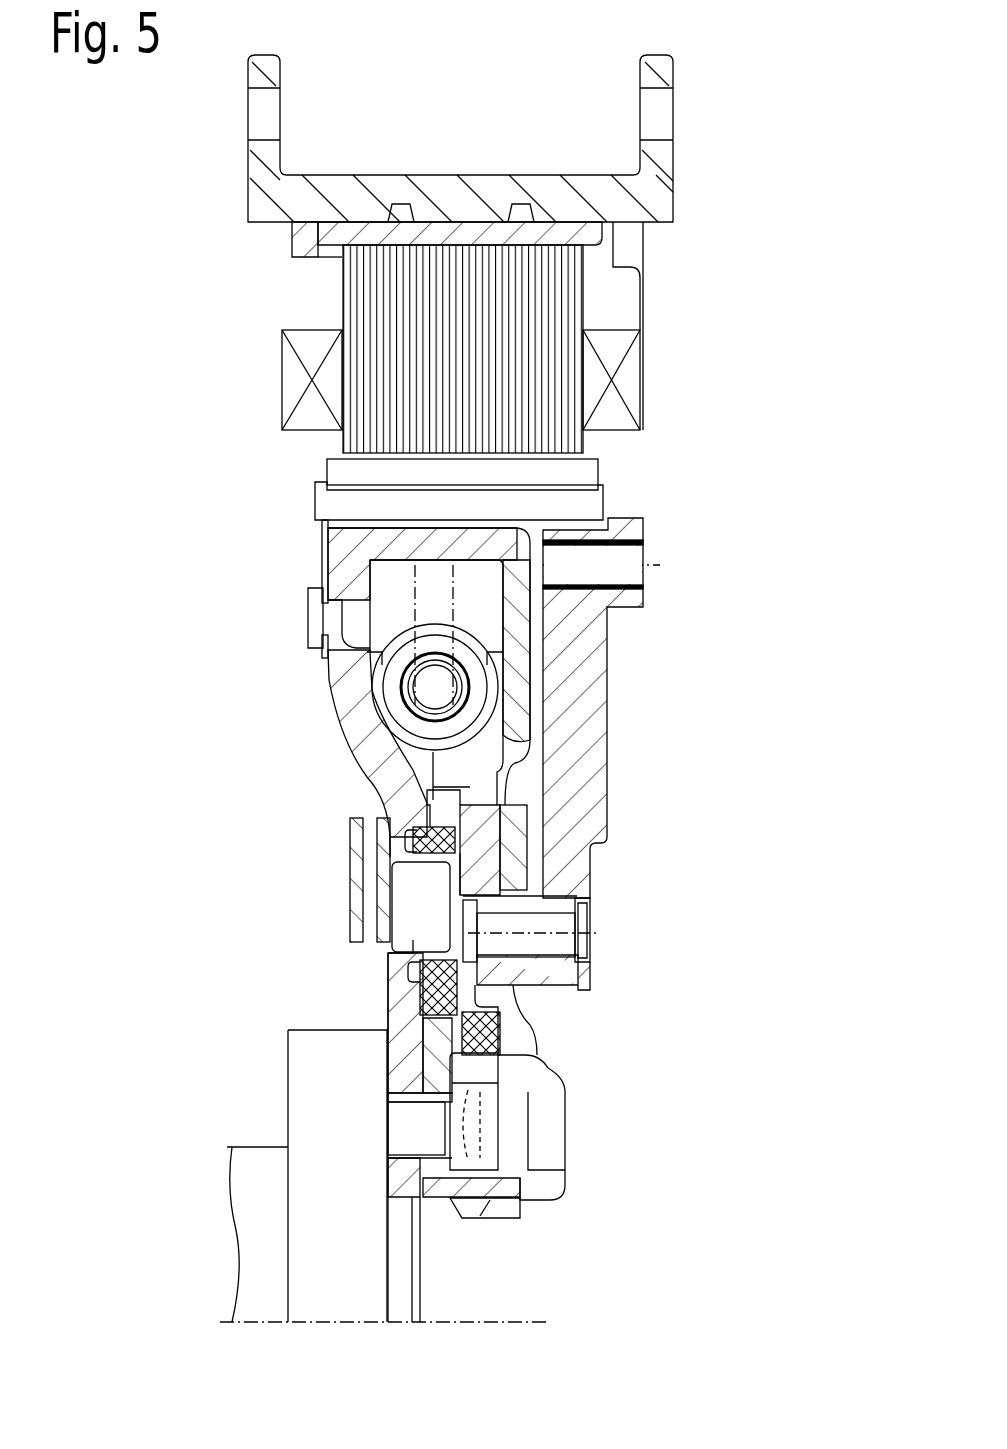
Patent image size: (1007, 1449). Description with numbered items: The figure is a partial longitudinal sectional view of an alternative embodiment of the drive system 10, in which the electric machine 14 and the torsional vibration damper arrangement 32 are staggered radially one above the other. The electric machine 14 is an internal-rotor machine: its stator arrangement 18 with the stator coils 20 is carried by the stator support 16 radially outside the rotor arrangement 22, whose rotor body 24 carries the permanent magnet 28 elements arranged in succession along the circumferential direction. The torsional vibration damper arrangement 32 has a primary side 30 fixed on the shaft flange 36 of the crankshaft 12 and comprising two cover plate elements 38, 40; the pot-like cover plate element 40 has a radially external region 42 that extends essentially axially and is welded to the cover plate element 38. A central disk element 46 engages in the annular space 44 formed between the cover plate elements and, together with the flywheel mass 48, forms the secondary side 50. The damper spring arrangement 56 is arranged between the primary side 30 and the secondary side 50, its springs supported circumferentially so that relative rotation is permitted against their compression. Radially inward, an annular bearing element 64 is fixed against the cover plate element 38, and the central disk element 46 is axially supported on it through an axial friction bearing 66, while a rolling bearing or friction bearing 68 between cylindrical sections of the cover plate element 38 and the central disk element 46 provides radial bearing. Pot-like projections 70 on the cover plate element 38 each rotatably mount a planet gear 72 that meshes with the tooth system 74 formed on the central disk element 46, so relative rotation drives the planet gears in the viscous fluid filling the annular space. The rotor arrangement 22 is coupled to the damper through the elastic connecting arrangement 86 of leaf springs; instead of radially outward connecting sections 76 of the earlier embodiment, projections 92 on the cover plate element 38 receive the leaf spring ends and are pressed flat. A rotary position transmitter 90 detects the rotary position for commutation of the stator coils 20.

The drive system 10 is at (732, 197).
The crankshaft 12 is at (246, 1245).
The electric machine 14 is at (717, 117).
The stator support 16 is at (422, 175).
The stator arrangement 18 is at (533, 126).
The stator coils 20 is at (367, 288).
The rotor arrangement 22 is at (281, 500).
The rotor body 24 is at (582, 503).
The permanent magnet 28 is at (603, 460).
The primary side 30 is at (280, 796).
The torsional vibration damper arrangement 32 is at (247, 1003).
The shaft flange 36 is at (303, 1058).
The cover plate element 38 is at (352, 718).
The cover plate element 40 is at (512, 797).
The radially external region 42 is at (455, 545).
The annular space 44 is at (583, 538).
The central disk element 46 is at (568, 1108).
The flywheel mass 48 is at (587, 632).
The secondary side 50 is at (711, 842).
The damper spring arrangement 56 is at (488, 704).
The annular bearing element 64 is at (447, 1033).
The axial friction bearing 66 is at (492, 1047).
The rolling bearing or friction bearing 68 is at (497, 1203).
The pot-like projections 70 is at (427, 913).
The planet gear 72 is at (460, 833).
The tooth system 74 is at (440, 785).
The connecting sections 76 is at (302, 643).
The elastic connecting arrangement 86 is at (282, 561).
The rotary position transmitter 90 is at (337, 848).
The projections 92 is at (326, 610).